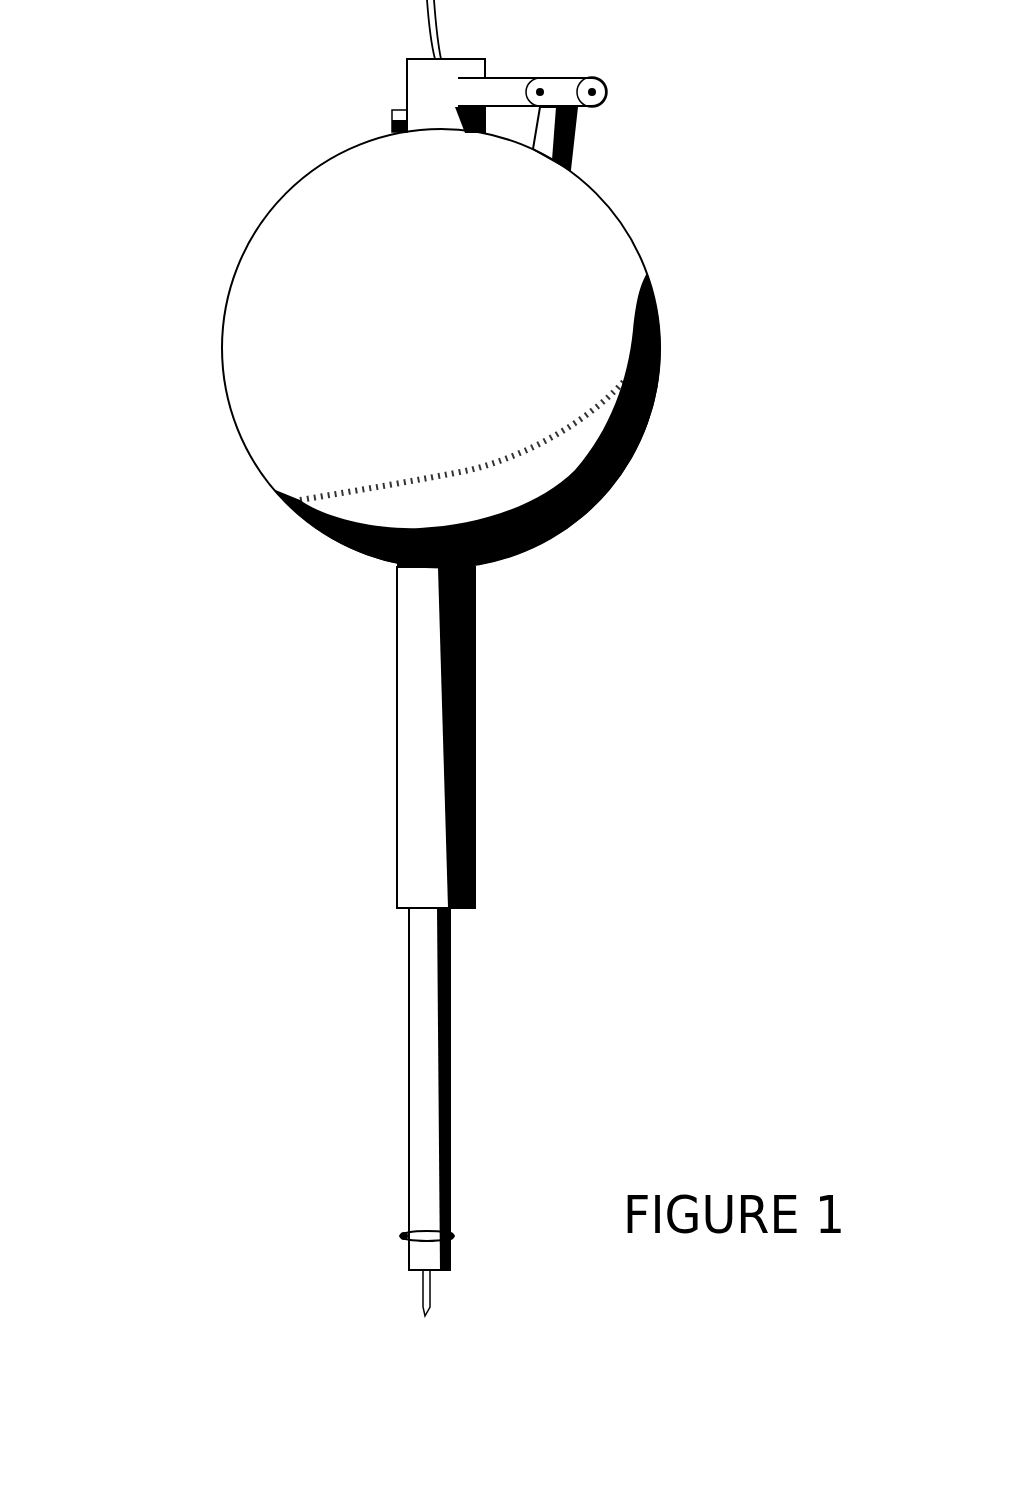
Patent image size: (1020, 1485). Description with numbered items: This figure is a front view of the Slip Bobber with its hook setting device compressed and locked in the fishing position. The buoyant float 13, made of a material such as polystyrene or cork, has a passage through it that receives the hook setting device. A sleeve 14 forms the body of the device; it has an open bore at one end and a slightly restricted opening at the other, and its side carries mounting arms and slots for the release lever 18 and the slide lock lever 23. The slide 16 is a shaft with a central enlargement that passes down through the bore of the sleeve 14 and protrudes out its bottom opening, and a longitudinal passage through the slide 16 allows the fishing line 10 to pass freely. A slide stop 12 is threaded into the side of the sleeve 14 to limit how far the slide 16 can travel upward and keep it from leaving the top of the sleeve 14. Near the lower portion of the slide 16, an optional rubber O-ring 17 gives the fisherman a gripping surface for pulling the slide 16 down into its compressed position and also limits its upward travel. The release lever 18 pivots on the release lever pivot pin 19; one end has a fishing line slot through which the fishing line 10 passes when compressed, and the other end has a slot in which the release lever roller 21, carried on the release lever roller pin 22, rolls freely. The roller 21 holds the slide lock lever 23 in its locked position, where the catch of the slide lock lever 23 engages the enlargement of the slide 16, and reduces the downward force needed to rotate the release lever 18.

The fishing line 10 is at (430, 21).
The slide stop 12 is at (392, 118).
The float 13 is at (385, 350).
The sleeve 14 is at (437, 655).
The slide 16 is at (432, 962).
The O-ring 17 is at (400, 1236).
The release lever 18 is at (563, 92).
The release lever pivot pin 19 is at (540, 88).
The release lever roller 21 is at (608, 87).
The release lever roller pin 22 is at (603, 105).
The slide lock lever 23 is at (575, 133).